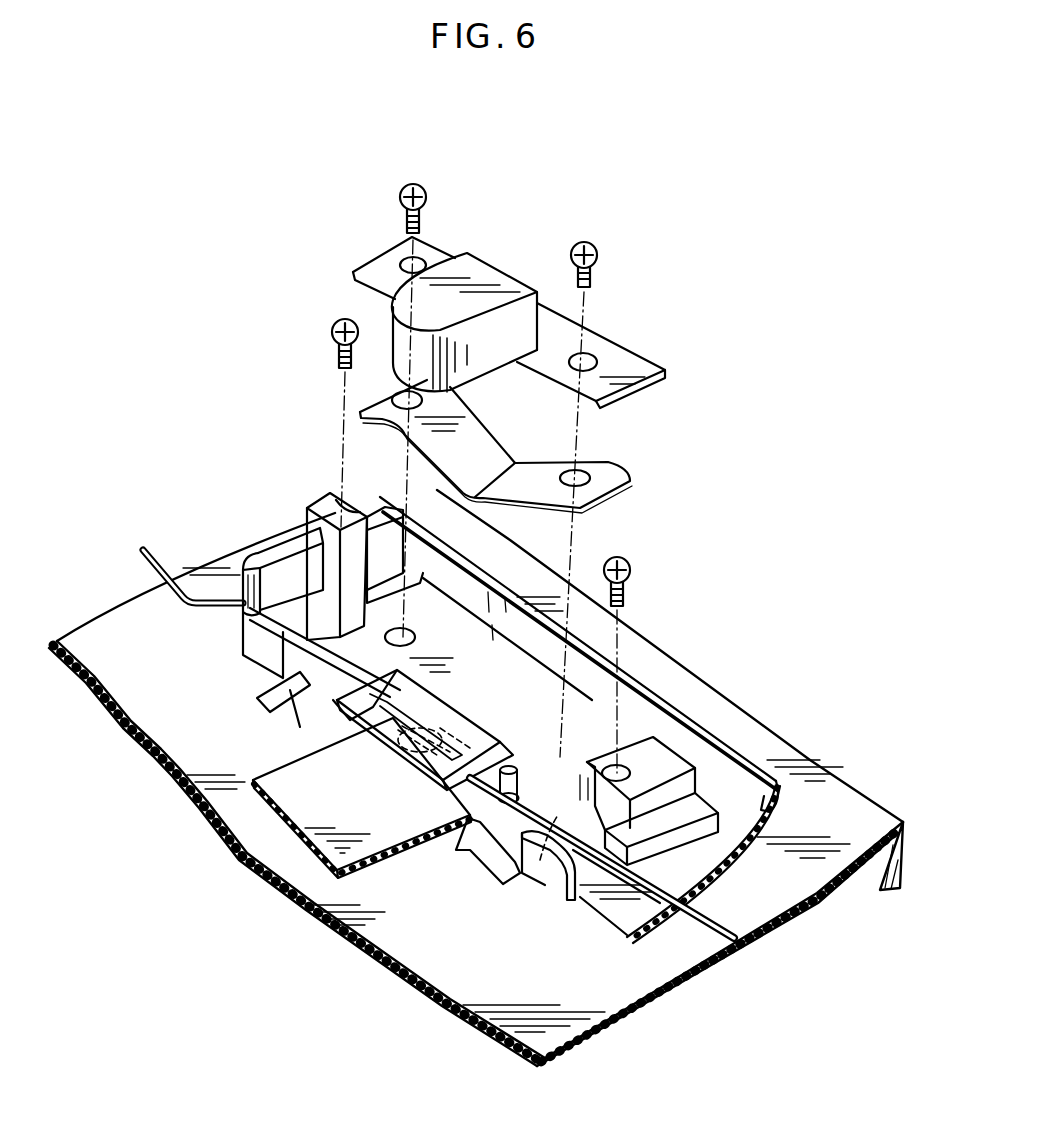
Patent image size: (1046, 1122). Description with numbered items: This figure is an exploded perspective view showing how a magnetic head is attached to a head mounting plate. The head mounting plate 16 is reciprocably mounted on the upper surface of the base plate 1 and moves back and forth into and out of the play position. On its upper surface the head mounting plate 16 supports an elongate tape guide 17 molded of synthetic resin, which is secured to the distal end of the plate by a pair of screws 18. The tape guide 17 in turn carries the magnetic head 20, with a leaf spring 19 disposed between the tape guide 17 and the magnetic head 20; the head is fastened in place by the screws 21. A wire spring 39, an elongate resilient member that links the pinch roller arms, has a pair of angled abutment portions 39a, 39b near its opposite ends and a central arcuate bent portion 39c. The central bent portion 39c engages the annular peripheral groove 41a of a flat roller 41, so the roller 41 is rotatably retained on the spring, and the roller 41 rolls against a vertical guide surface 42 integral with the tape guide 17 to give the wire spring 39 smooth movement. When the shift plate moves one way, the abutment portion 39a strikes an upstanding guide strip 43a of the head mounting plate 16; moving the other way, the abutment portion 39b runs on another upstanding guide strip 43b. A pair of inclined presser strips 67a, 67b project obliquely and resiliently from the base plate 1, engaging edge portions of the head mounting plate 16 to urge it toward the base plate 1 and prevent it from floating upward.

The base plate 1 is at (622, 1010).
The head mounting plate 16 is at (407, 850).
The tape guide 17 is at (727, 853).
The screws 18 is at (330, 332).
The leaf spring 19 is at (488, 424).
The magnetic head 20 is at (393, 317).
The screws 21 is at (428, 193).
The wire spring 39 is at (703, 934).
The angled abutment portion 39a is at (540, 860).
The angled abutment portion 39b is at (176, 598).
The central arcuate bent portion 39c is at (403, 750).
The flat roller 41 is at (400, 737).
The annular peripheral groove 41a is at (415, 760).
The vertical guide surface 42 is at (458, 750).
The upstanding guide strip 43a is at (553, 893).
The upstanding guide strip 43b is at (246, 645).
The inclined presser strip 67a is at (488, 845).
The inclined presser strip 67b is at (282, 712).